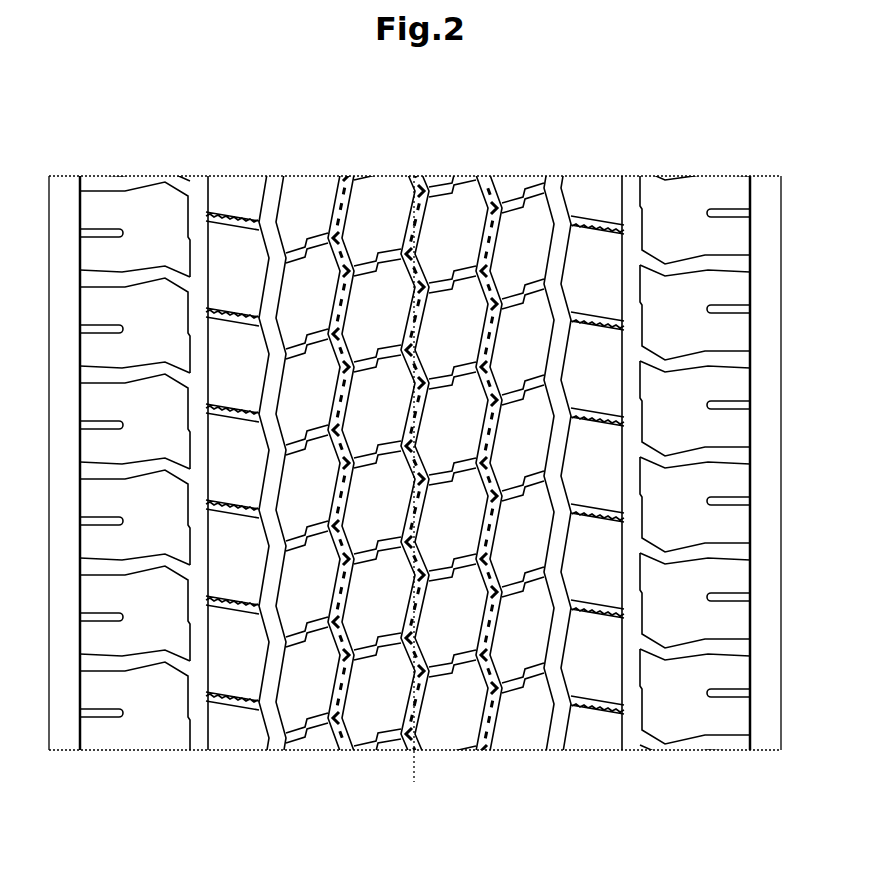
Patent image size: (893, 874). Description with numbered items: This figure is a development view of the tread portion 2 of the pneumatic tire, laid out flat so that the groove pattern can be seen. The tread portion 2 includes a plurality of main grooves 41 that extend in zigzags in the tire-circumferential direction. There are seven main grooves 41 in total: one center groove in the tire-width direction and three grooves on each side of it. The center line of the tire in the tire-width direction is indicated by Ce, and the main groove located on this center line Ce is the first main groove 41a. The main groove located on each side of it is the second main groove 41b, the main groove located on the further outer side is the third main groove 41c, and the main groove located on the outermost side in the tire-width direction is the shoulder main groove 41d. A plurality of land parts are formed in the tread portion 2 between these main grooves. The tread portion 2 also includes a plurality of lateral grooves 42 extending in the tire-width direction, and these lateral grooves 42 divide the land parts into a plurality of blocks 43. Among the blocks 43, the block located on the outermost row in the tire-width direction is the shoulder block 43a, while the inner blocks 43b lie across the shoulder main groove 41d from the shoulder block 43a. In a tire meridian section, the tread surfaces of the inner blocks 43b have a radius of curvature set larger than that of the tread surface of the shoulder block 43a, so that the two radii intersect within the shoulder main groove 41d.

The tread portion 2 is at (290, 160).
The center line Ce is at (411, 176).
The main grooves 41 is at (395, 102).
The first main groove 41a is at (427, 182).
The second main groove 41b is at (488, 188).
The third main groove 41c is at (553, 190).
The shoulder main groove 41d is at (636, 175).
The lateral grooves 42 is at (302, 273).
The blocks 43 is at (245, 102).
The shoulder block 43a is at (142, 208).
The inner blocks 43b is at (228, 240).